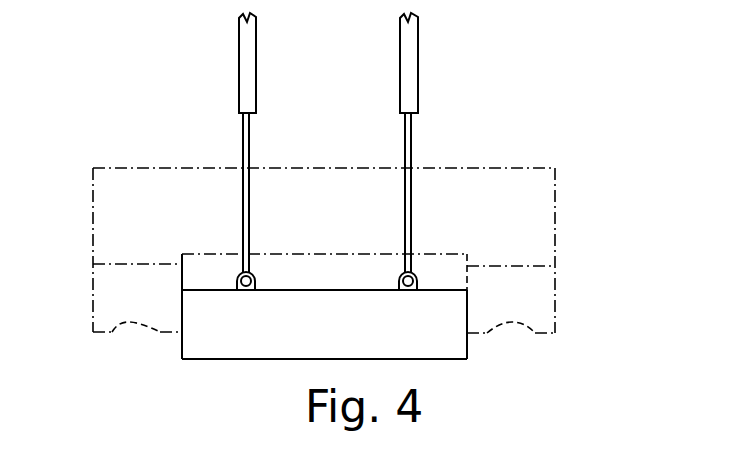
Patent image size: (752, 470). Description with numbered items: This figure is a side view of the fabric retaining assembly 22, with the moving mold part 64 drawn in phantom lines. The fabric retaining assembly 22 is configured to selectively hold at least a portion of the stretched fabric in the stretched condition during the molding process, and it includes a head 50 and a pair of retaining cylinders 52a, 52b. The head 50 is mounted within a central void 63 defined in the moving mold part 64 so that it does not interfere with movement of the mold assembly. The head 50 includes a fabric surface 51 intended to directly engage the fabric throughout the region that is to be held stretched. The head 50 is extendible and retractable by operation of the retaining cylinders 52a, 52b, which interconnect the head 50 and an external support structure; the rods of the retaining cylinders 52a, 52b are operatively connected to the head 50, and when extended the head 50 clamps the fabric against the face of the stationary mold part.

The fabric retaining assembly 22 is at (190, 153).
The head 50 is at (427, 352).
The fabric surface 51 is at (224, 359).
The retaining cylinder 52a is at (256, 95).
The retaining cylinder 52b is at (418, 88).
The void 63 is at (212, 267).
The moving mold part 64 is at (548, 233).